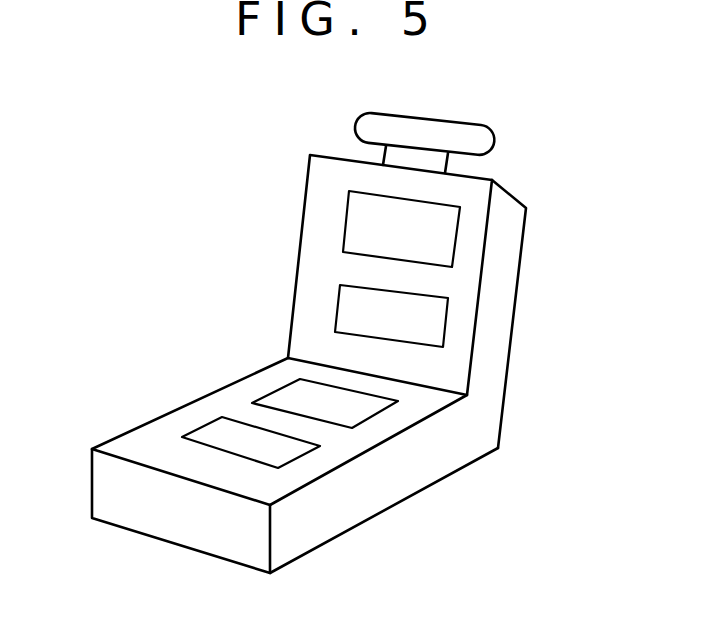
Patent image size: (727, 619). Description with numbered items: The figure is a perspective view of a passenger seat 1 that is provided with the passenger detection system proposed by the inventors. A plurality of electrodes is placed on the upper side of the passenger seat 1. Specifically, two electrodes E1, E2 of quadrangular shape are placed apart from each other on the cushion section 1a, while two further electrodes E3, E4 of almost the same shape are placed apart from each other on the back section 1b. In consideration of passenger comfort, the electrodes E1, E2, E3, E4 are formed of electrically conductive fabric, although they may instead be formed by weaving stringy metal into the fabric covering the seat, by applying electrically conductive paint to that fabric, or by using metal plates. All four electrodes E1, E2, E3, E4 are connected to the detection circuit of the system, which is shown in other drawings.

The passenger seat 1 is at (278, 343).
The cushion section 1a is at (183, 420).
The back section 1b is at (315, 218).
The electrode E1 is at (295, 452).
The electrode E2 is at (365, 410).
The electrode E3 is at (435, 325).
The electrode E4 is at (447, 242).